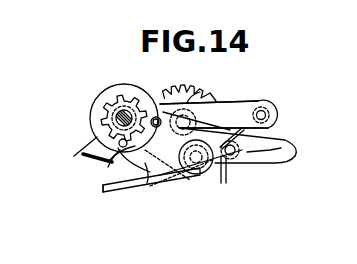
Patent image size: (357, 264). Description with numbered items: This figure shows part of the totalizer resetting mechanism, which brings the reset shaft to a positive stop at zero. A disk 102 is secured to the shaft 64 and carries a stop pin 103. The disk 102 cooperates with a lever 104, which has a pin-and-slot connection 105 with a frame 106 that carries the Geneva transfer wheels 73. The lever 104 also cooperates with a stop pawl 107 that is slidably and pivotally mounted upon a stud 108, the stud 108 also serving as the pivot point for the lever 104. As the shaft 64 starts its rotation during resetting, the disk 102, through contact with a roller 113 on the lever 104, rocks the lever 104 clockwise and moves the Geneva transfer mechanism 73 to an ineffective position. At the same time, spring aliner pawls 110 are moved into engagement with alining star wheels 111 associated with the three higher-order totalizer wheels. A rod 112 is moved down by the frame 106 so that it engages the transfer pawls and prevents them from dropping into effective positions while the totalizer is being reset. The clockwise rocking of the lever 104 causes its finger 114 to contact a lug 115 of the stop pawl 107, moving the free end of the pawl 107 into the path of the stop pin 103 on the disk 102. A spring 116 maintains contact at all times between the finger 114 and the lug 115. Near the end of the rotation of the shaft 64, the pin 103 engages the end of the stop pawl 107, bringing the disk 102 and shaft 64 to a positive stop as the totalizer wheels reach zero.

The shaft 64 is at (118, 113).
The disk 102 is at (97, 131).
The alining star wheels 111 is at (131, 96).
The roller 113 is at (170, 94).
The Geneva transfer mechanism 73 is at (187, 103).
The frame 106 is at (230, 113).
The rod 112 is at (270, 114).
The spring 116 is at (273, 139).
The lever 104 is at (265, 158).
The pin-and-slot connection 105 is at (225, 158).
The stud 108 is at (200, 160).
The stop pawl 107 is at (140, 163).
The lug 115 is at (147, 183).
The finger 114 is at (103, 189).
The spring aliner pawls 110 is at (87, 158).
The stop pin 103 is at (108, 167).